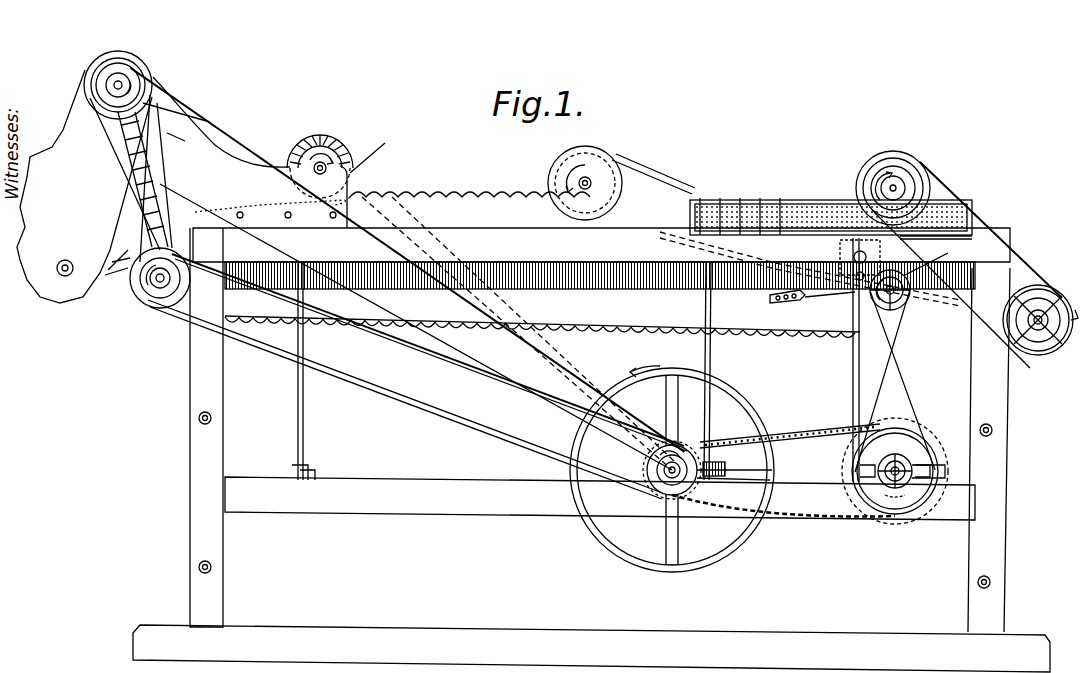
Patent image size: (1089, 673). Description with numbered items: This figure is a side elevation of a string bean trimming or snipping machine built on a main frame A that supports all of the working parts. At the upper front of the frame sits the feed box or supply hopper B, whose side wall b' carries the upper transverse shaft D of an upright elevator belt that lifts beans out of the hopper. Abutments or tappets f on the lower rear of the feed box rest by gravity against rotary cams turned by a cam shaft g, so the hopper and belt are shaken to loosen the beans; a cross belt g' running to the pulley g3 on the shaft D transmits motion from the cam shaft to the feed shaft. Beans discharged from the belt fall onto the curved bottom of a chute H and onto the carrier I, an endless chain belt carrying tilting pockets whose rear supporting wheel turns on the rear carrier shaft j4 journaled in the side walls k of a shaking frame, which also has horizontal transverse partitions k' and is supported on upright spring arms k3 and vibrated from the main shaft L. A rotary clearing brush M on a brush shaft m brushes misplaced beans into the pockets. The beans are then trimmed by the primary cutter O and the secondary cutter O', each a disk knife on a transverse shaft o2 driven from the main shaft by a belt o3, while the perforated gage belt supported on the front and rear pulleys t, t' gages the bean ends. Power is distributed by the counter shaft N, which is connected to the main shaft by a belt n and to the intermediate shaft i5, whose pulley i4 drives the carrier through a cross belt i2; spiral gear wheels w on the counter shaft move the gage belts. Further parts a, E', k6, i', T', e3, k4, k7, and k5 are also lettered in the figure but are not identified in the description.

The main frame A is at (591, 450).
The feed box or supply hopper B is at (83, 192).
The side wall of feed box b' is at (37, 192).
The pivot a is at (65, 276).
The upper transverse shaft D is at (122, 82).
The pulley on upper feed shaft g3 is at (176, 101).
The chute H is at (221, 122).
The cross belt g' is at (124, 178).
The arm E' is at (395, 286).
The horizontal transverse partition k' is at (441, 384).
The abutments or tappets f is at (117, 276).
The cam shaft g is at (159, 288).
The belt k6 is at (166, 285).
The rotary clearing brush M is at (322, 150).
The brush shaft m is at (314, 172).
The connecting rod i' is at (512, 306).
The carrier I is at (472, 186).
The primary cutter O is at (585, 166).
The cutter shaft o2 is at (925, 160).
The cutter belt o3 is at (650, 172).
The hopper T' is at (831, 205).
The front gage belt pulley t is at (704, 182).
The rear gage belt pulley t' is at (976, 184).
The secondary cutter O' is at (959, 245).
The main shaft L is at (1038, 330).
The rear carrier shaft j4 is at (887, 356).
The rod e3 is at (934, 259).
The cross belt i2 is at (925, 355).
The side walls of shaking frame k is at (542, 323).
The upright spring arms k3 is at (305, 430).
The counter shaft N is at (660, 480).
The belt k4 is at (660, 492).
The hub k7 is at (680, 490).
The spiral gear wheels w is at (740, 470).
The belt n is at (740, 520).
The pulley on intermediate shaft i4 is at (905, 485).
The intermediate shaft i5 is at (895, 475).
The bearing k5 is at (950, 471).